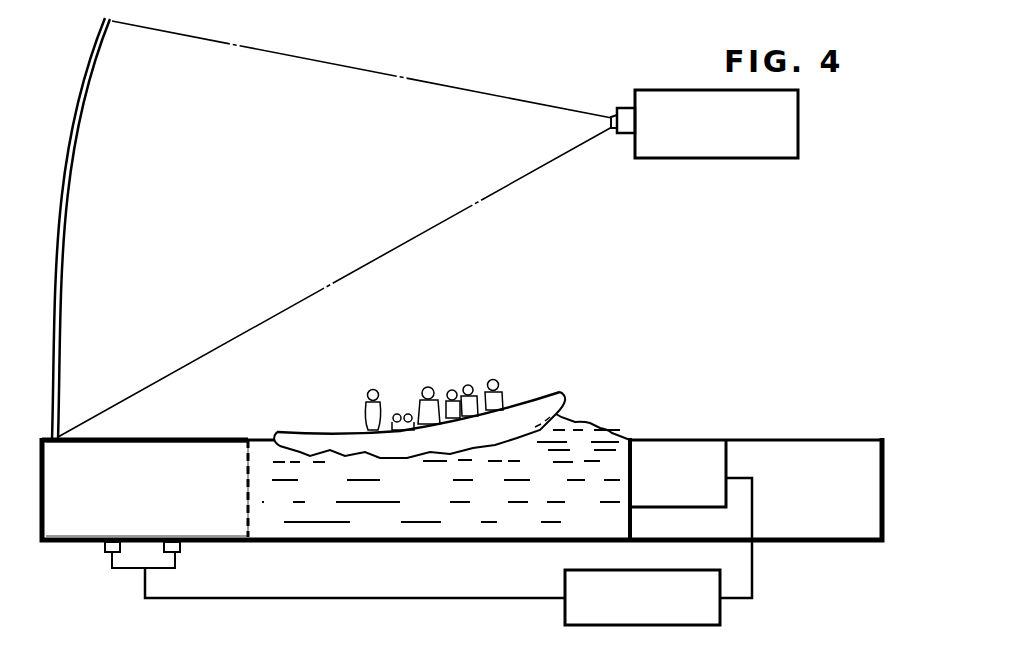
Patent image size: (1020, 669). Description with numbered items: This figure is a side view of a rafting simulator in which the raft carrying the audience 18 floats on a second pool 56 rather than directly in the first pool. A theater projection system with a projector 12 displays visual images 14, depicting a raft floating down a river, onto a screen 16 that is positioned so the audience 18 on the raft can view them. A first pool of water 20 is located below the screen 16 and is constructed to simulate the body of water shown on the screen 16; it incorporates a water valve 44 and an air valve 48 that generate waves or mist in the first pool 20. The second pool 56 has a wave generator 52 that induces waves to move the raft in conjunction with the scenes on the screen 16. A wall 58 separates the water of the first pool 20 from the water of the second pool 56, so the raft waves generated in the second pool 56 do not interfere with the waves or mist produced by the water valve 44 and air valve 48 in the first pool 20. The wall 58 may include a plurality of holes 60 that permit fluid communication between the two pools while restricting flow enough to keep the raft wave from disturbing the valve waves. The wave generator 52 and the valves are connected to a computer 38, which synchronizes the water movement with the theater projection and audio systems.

The projector 12 is at (704, 124).
The visual images 14 is at (335, 229).
The screen 16 is at (83, 84).
The audience 18 is at (458, 366).
The first pool of water 20 is at (462, 489).
The computer 38 is at (432, 596).
The water valve 44 is at (104, 552).
The air valve 48 is at (182, 550).
The wave generator 52 is at (691, 518).
The second pool 56 is at (446, 474).
The wall 58 is at (247, 460).
The holes 60 is at (247, 503).